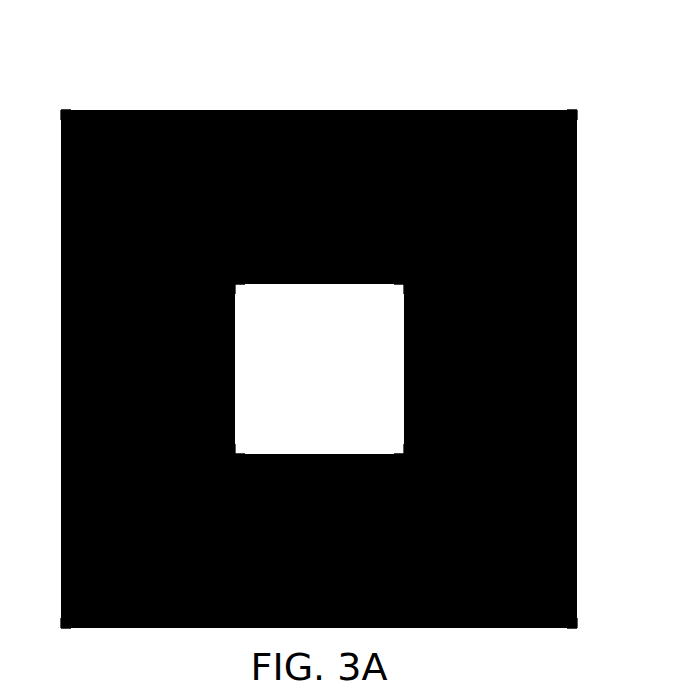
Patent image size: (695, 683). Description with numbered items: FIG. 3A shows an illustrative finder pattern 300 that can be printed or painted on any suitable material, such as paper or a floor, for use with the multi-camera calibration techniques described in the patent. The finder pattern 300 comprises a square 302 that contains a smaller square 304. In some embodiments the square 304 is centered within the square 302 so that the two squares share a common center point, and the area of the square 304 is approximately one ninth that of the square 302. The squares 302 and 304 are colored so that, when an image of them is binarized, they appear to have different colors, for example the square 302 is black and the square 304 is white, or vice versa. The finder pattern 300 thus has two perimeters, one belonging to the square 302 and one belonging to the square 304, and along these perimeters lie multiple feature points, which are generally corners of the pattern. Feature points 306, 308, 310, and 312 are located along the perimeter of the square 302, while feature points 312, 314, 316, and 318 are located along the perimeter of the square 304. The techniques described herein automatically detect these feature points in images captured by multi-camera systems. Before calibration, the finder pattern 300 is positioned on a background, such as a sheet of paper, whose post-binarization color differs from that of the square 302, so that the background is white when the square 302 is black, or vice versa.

The finder pattern 300 is at (336, 354).
The square 302 is at (557, 358).
The smaller square 304 is at (332, 376).
The feature point 306 is at (53, 100).
The feature point 308 is at (570, 100).
The feature point 310 is at (53, 622).
The feature point 312 is at (570, 622).
The feature point 314 is at (395, 278).
The feature point 316 is at (228, 444).
The feature point 318 is at (395, 444).